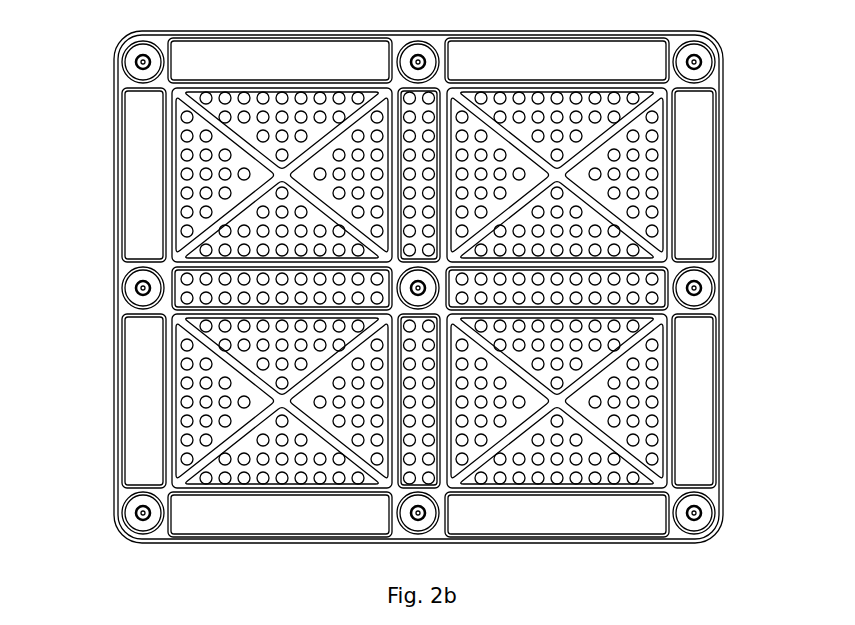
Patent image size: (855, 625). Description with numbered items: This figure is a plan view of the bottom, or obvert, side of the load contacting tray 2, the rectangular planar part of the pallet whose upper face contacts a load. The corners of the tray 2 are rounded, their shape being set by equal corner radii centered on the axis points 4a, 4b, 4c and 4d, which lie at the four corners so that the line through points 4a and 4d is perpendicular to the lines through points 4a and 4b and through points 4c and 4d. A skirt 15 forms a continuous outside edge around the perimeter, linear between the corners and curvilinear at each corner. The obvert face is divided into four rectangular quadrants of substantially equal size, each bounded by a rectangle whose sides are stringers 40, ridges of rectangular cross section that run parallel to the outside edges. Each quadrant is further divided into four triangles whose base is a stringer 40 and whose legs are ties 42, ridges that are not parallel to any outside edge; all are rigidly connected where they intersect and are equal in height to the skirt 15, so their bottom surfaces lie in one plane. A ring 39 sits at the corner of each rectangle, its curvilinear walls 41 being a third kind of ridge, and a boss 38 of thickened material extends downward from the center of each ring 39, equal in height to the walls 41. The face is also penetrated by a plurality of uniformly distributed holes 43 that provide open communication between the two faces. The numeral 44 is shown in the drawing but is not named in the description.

The load contacting tray 2 is at (108, 164).
The skirt 15 is at (600, 37).
The boss 38 is at (700, 292).
The ring 39 is at (405, 43).
The stringer 40 is at (663, 63).
The wall 41 is at (435, 45).
The tie 42 is at (627, 450).
The hole 43 is at (658, 394).
The edge 44 is at (678, 37).
The axis point 4a is at (139, 63).
The axis point 4b is at (140, 512).
The axis point 4c is at (702, 508).
The axis point 4d is at (702, 63).